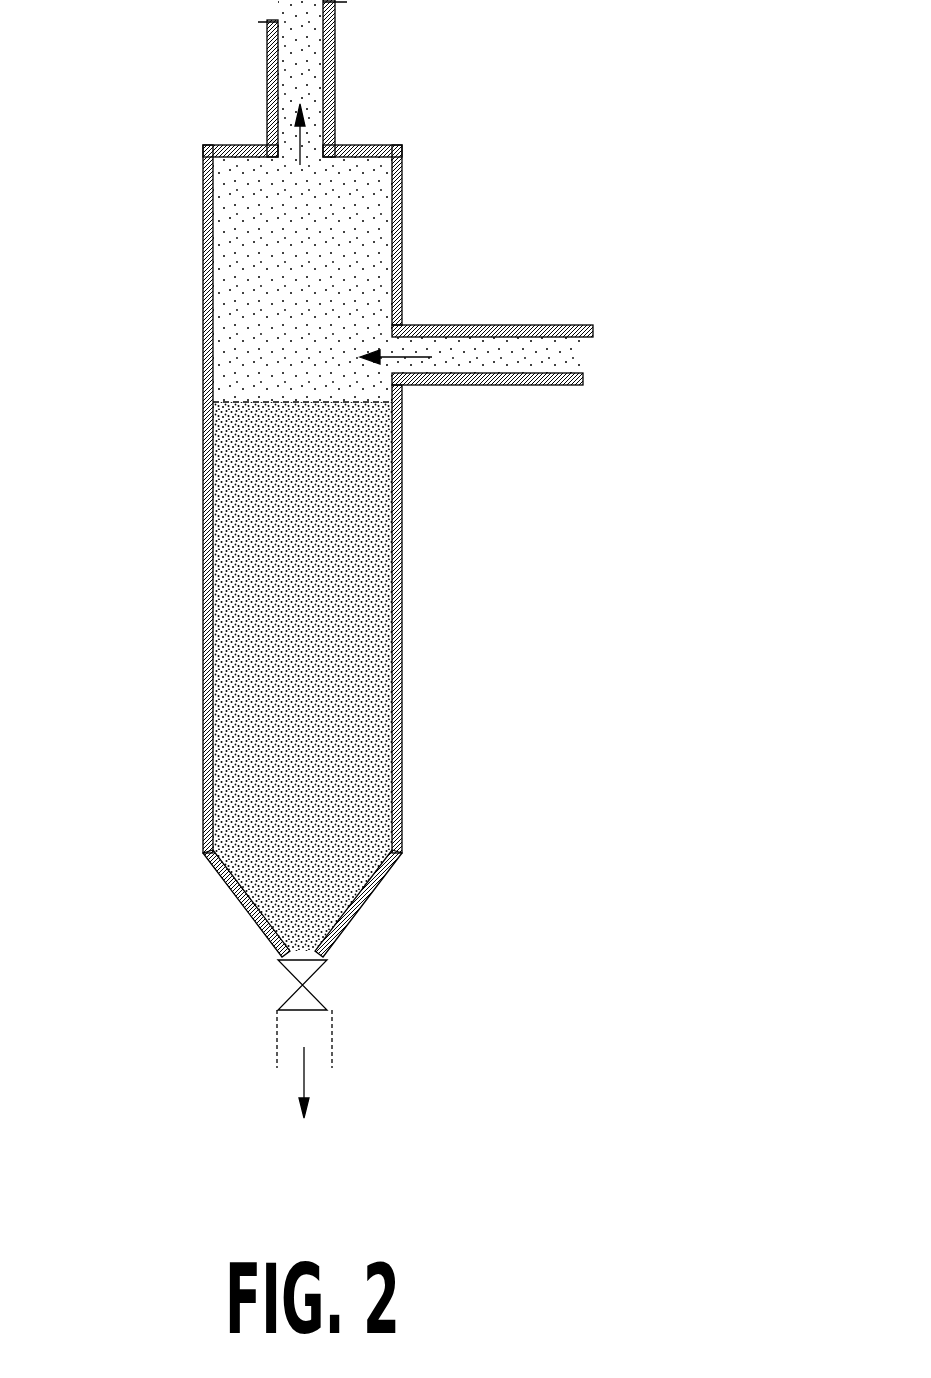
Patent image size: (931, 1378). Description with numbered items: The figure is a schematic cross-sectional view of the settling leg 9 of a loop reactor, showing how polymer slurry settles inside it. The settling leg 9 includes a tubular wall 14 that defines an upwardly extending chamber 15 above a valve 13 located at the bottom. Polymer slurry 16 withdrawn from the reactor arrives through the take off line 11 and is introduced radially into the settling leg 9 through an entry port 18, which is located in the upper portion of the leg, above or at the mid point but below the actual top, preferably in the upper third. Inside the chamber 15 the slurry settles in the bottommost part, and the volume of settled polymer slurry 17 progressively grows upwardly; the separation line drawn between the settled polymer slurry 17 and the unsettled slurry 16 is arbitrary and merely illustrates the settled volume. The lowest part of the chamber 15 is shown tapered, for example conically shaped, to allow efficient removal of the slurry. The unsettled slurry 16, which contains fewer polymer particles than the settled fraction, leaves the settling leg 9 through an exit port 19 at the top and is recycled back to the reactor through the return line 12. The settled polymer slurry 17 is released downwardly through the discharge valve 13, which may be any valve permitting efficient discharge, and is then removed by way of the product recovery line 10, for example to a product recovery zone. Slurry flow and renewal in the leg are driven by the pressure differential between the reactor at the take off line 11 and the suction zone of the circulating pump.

The settling leg 9 is at (680, 168).
The product recovery line 10 is at (315, 1110).
The take off line 11 is at (548, 323).
The return line 12 is at (335, 67).
The valve 13 is at (327, 985).
The tubular wall 14 is at (408, 593).
The chamber 15 is at (203, 600).
The polymer slurry 16 is at (376, 246).
The settled polymer slurry 17 is at (236, 816).
The entry port 18 is at (410, 384).
The exit port 19 is at (335, 140).